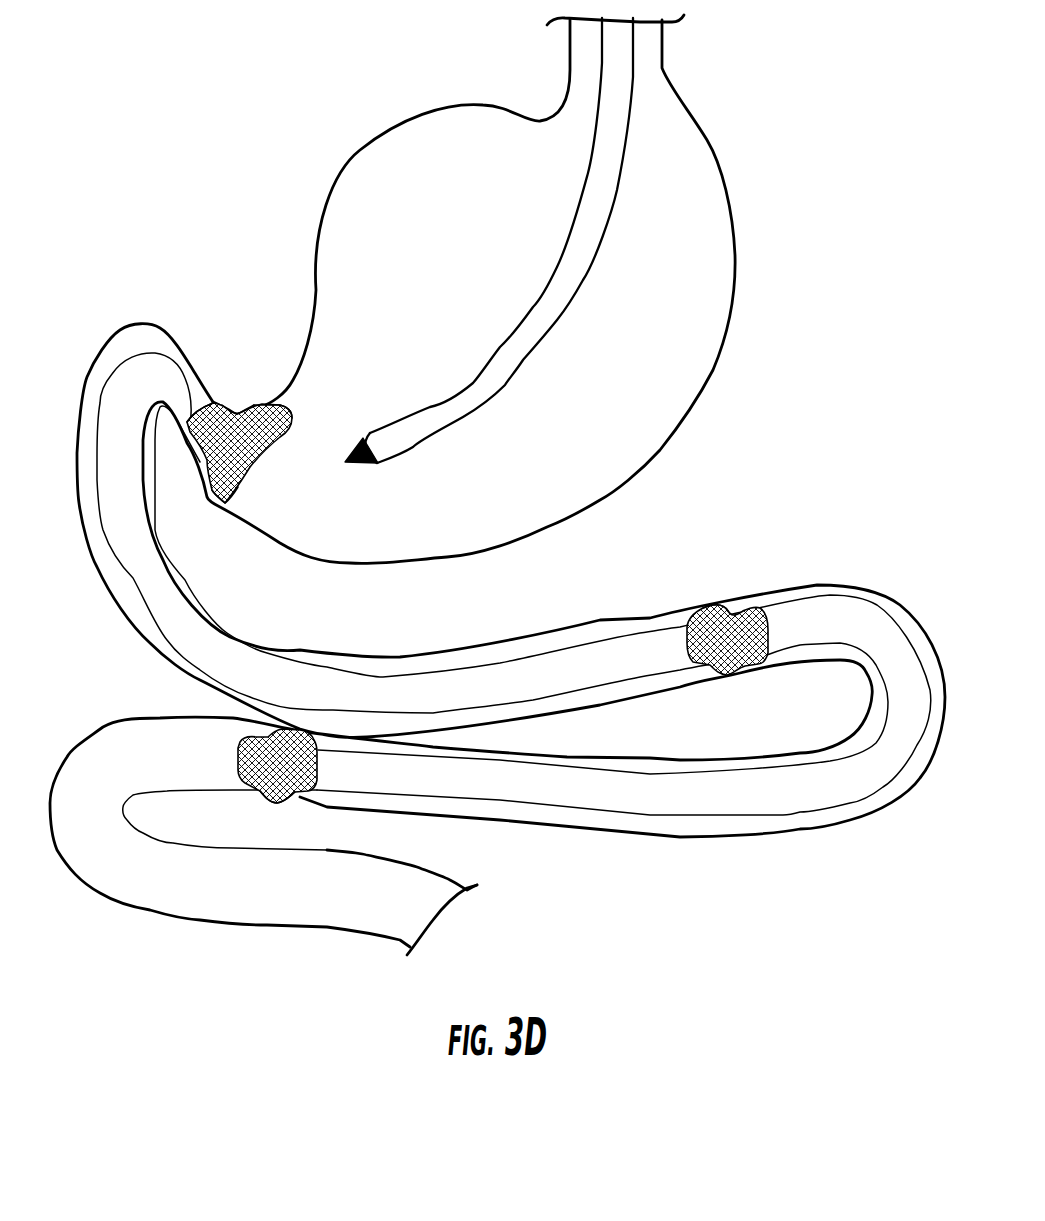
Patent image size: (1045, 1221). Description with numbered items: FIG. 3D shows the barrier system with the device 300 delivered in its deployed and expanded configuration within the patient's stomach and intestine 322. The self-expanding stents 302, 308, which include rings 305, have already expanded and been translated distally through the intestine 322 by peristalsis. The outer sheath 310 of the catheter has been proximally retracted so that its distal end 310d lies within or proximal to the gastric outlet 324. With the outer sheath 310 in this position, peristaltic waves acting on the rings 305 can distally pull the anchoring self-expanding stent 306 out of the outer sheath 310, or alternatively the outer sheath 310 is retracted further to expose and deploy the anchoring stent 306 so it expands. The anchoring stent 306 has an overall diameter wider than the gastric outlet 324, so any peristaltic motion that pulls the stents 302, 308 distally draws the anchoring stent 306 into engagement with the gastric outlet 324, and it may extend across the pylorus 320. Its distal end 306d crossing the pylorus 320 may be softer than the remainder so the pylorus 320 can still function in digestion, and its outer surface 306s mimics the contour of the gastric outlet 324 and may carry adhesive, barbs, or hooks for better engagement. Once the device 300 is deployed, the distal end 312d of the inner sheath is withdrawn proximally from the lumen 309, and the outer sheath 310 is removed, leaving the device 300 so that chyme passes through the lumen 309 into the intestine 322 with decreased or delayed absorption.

The device 300 is at (491, 584).
The self-expanding stent 302 is at (248, 780).
The rings 305 is at (714, 603).
The anchoring self-expanding stent 306 is at (250, 465).
The distal end of the anchoring stent 306d is at (197, 403).
The outer surface of the anchoring stent 306s is at (220, 505).
The self-expanding stent 308 is at (740, 607).
The lumen 309 is at (133, 577).
The outer sheath 310 is at (477, 368).
The distal end of the outer sheath 310d is at (368, 436).
The distal end of the inner sheath 312d is at (363, 466).
The pylorus 320 is at (240, 410).
The intestine 322 is at (105, 726).
The gastric outlet 324 is at (261, 402).